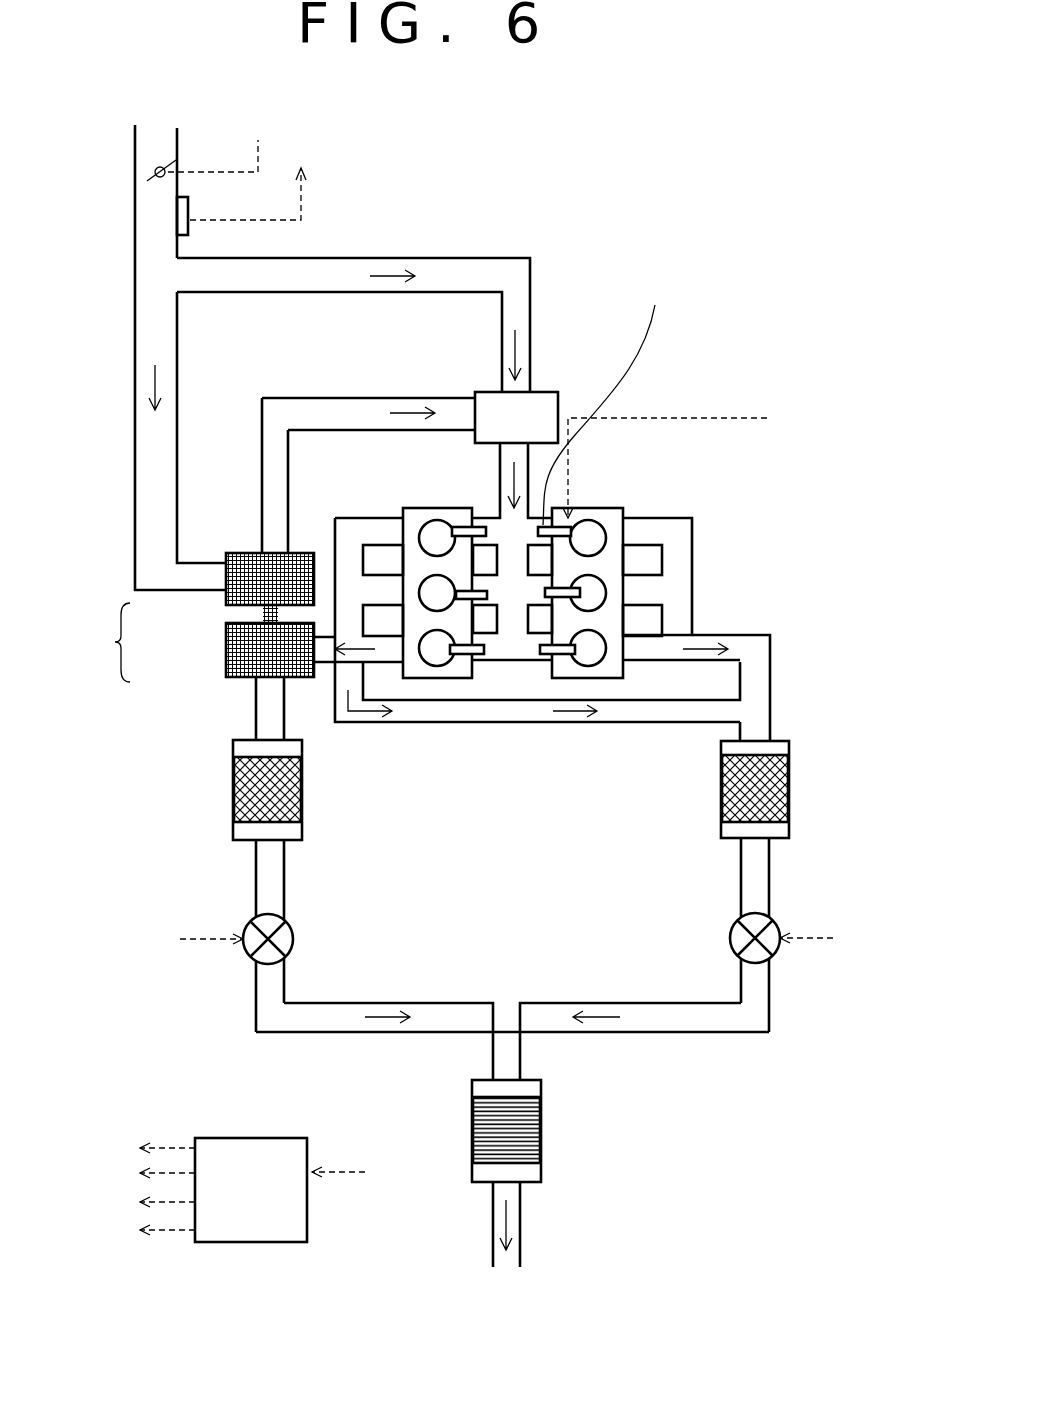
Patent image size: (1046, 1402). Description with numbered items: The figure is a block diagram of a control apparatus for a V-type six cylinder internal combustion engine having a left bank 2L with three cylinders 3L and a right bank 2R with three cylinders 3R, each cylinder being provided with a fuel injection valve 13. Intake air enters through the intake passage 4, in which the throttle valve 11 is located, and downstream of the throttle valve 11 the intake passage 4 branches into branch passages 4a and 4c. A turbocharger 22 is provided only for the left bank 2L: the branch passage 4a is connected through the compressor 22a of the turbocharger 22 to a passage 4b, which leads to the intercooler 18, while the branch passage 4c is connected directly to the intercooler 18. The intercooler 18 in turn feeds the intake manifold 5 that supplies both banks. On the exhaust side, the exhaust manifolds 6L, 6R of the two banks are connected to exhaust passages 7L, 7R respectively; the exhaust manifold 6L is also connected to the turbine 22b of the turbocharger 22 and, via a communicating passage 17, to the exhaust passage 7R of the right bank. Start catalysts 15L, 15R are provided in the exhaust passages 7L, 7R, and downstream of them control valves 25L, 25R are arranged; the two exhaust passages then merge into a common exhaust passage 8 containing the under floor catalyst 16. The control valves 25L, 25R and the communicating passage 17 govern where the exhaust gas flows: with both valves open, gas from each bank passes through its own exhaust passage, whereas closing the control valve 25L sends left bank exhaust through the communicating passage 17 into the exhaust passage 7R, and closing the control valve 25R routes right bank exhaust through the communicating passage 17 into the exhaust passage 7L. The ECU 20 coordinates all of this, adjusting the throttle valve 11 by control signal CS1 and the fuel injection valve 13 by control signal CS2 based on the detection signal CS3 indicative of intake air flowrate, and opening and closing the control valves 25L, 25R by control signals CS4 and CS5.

The intake passage 4 is at (135, 238).
The branch passage 4a is at (177, 397).
The passage 4b is at (440, 398).
The branch passage 4c is at (447, 258).
The throttle valve 11 is at (150, 172).
The intercooler 18 is at (550, 392).
The fuel injection valve 13 is at (610, 397).
The intake manifold 5 is at (522, 604).
The left bank 2L is at (408, 508).
The right bank 2R is at (622, 507).
The cylinders 3L is at (437, 520).
The cylinders 3R is at (606, 510).
The exhaust manifold 6L is at (350, 530).
The exhaust manifold 6R is at (692, 530).
The exhaust passage 7L is at (256, 718).
The exhaust passage 7R is at (743, 633).
The communicating passage 17 is at (522, 723).
The turbocharger 22 is at (193, 617).
The compressor 22a is at (226, 605).
The turbine 22b is at (227, 643).
The start catalyst 15L is at (302, 772).
The start catalyst 15R is at (721, 772).
The control valve 25L is at (295, 932).
The control valve 25R is at (730, 940).
The common exhaust passage 8 is at (520, 1055).
The under floor catalyst 16 is at (541, 1118).
The ECU 20 is at (242, 1143).
The control signal CS1 is at (226, 139).
The control signal CS2 is at (694, 461).
The detection signal CS3 is at (305, 664).
The control signal CS4 is at (179, 940).
The control signal CS5 is at (837, 938).